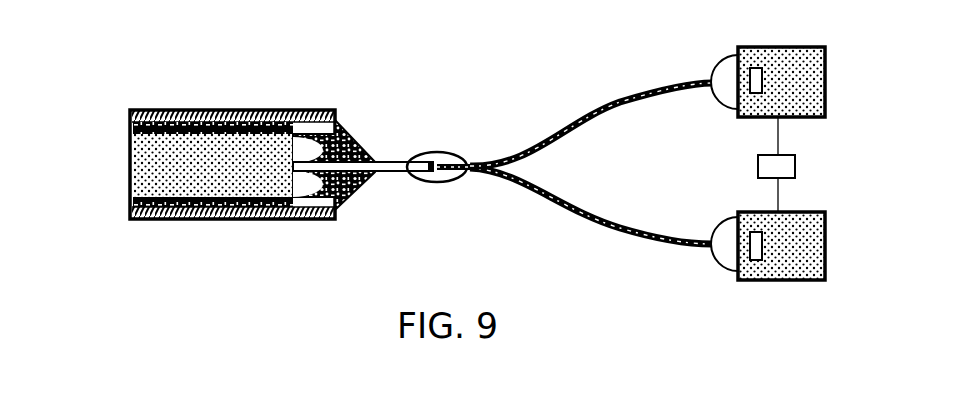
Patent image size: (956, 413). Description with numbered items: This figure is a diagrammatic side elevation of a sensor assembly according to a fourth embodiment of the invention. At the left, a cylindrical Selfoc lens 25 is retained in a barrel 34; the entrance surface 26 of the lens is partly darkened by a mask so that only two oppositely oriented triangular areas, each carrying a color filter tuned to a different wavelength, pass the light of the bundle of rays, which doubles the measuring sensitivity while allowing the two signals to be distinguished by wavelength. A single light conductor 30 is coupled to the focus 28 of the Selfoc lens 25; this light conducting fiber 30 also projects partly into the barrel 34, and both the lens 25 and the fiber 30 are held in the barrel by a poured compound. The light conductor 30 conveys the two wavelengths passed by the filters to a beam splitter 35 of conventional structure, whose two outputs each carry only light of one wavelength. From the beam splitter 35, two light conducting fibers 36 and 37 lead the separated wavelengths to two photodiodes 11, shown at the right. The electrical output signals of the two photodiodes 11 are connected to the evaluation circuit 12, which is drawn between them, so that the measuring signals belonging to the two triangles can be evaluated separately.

The photodiodes 11 is at (808, 100).
The evaluation circuit 12 is at (758, 166).
The cylindrical Selfoc lens 25 is at (183, 145).
The entrance surface 26 is at (130, 162).
The focus 28 is at (345, 135).
The light conductor 30 is at (388, 166).
The barrel 34 is at (226, 111).
The beam splitter 35 is at (457, 152).
The light conducting fiber 36 is at (590, 120).
The light conducting fiber 37 is at (313, 111).